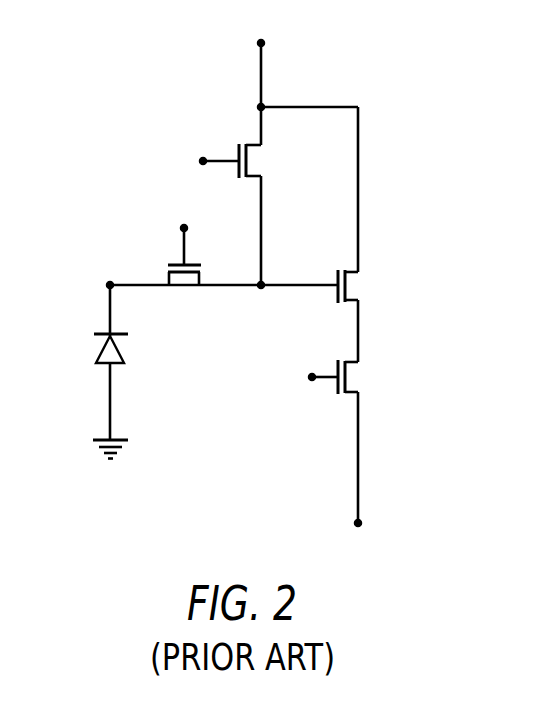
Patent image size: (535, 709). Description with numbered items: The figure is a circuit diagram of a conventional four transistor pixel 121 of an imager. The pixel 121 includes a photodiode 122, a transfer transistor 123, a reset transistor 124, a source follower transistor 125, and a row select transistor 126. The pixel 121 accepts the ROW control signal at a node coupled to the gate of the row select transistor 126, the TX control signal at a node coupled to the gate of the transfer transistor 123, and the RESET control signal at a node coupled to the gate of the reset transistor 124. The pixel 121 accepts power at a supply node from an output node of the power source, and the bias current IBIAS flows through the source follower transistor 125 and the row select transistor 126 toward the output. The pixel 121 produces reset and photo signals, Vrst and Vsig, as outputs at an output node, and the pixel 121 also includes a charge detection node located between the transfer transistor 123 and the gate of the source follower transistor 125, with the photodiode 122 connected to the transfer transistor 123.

The pixel 121 is at (110, 90).
The photodiode 122 is at (108, 352).
The transfer transistor 123 is at (182, 277).
The reset transistor 124 is at (248, 164).
The source follower transistor 125 is at (347, 290).
The row select transistor 126 is at (347, 382).